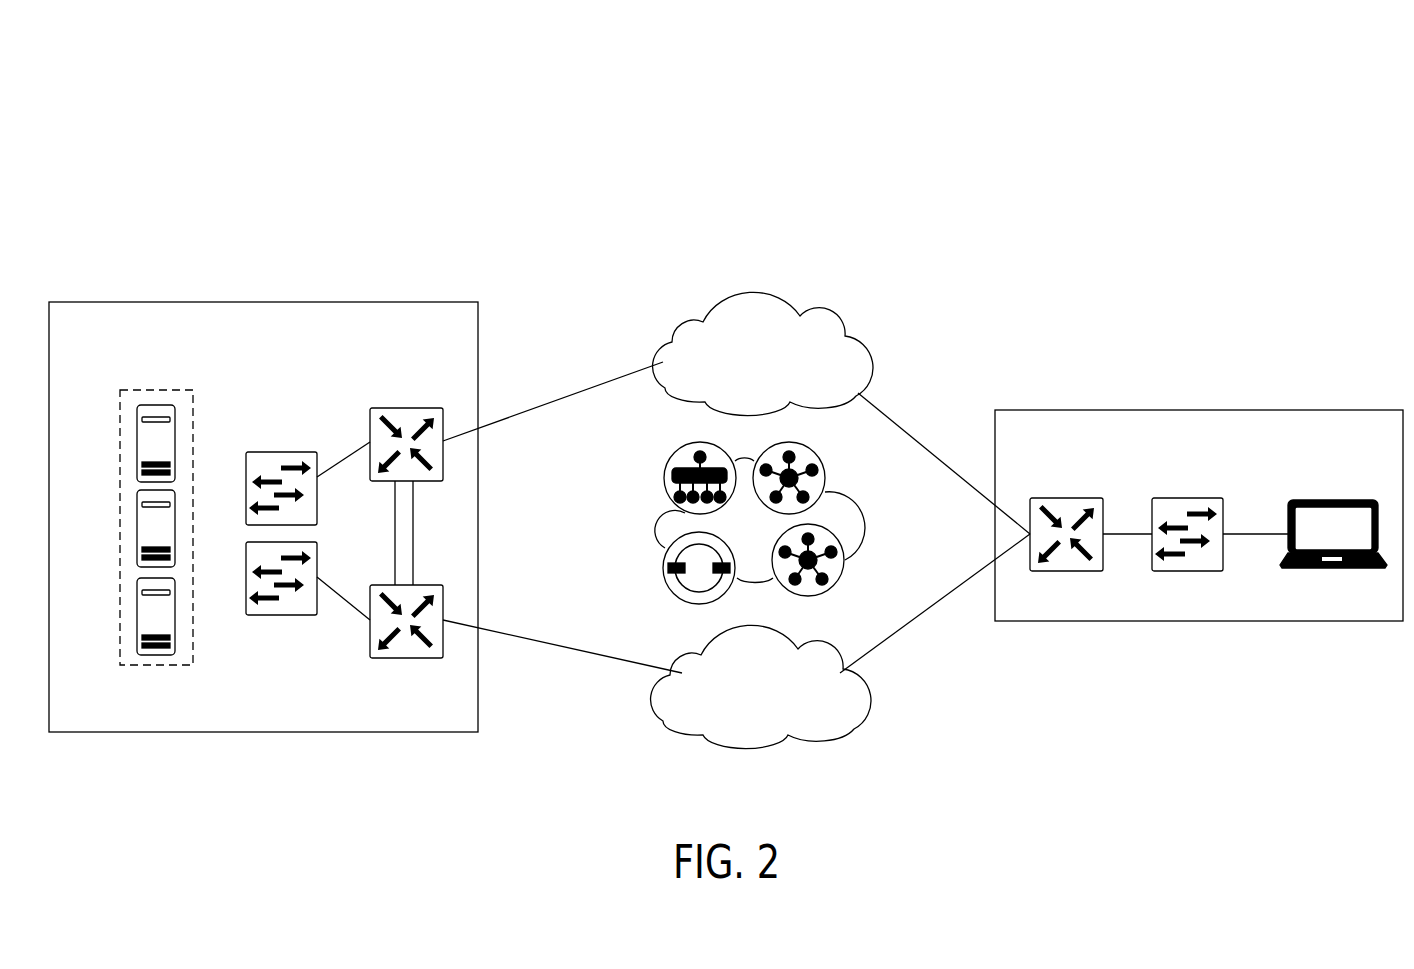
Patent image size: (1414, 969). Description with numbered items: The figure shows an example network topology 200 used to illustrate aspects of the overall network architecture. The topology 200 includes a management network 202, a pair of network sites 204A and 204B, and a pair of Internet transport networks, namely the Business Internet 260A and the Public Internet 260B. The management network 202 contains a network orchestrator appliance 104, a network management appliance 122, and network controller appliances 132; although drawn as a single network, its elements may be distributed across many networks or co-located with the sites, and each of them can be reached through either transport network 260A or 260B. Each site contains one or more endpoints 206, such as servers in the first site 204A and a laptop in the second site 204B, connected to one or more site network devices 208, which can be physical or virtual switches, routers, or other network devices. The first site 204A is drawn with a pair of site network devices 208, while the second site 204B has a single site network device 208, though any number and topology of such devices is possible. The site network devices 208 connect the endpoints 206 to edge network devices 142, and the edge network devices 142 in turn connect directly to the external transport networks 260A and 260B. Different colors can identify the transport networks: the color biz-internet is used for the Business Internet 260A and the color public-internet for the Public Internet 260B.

The network topology 200 is at (1355, 177).
The network site 204A is at (335, 350).
The network site 204B is at (1273, 456).
The endpoints 206 is at (136, 441).
The site network devices 208 is at (260, 452).
The edge network devices 142 is at (407, 408).
The Business Internet transport network 260A is at (773, 401).
The Public Internet transport network 260B is at (767, 731).
The management network 202 is at (868, 528).
The network management appliance 122 is at (671, 453).
The network controller appliances 132 is at (811, 450).
The network orchestrator appliance 104 is at (673, 596).